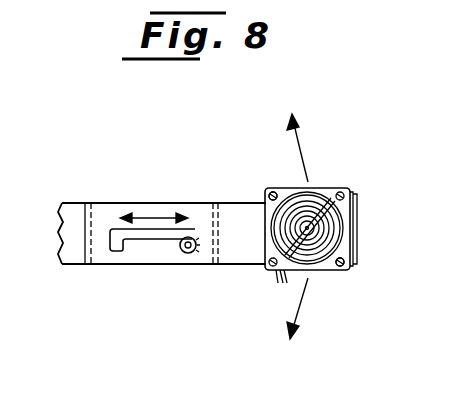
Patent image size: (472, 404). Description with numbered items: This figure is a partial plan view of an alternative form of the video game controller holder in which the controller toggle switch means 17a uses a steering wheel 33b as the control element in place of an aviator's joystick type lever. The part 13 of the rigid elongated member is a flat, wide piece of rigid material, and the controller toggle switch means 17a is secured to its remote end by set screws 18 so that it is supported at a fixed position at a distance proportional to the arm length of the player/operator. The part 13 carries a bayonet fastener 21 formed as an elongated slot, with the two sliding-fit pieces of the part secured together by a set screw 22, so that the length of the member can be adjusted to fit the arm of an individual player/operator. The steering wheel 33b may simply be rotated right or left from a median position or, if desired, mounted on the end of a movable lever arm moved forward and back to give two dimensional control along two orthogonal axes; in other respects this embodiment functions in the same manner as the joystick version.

The part of elongated member 13 is at (78, 212).
The bayonet fastener 21 is at (137, 240).
The set screw 22 is at (195, 255).
The controller toggle switch means 17a is at (326, 190).
The steering wheel 33b is at (340, 211).
The set screws 18 is at (270, 192).